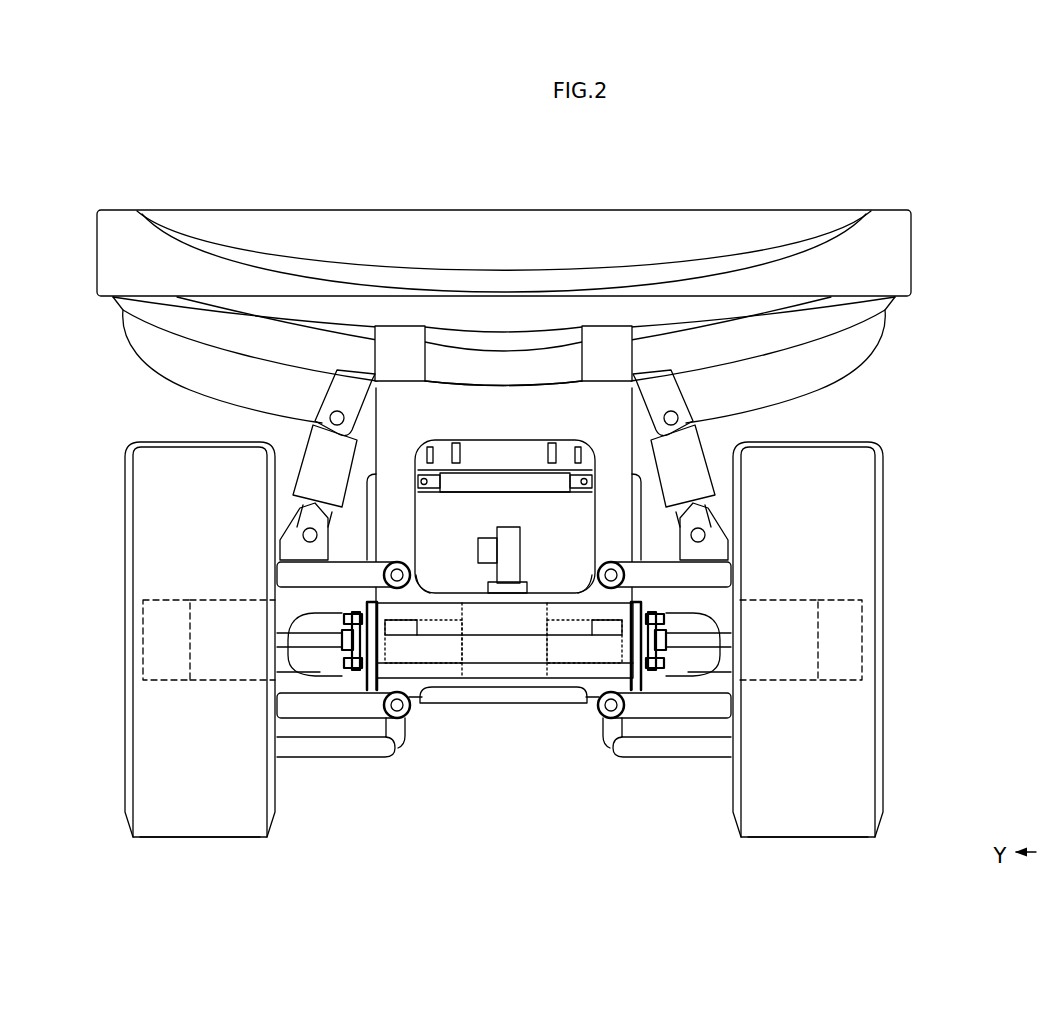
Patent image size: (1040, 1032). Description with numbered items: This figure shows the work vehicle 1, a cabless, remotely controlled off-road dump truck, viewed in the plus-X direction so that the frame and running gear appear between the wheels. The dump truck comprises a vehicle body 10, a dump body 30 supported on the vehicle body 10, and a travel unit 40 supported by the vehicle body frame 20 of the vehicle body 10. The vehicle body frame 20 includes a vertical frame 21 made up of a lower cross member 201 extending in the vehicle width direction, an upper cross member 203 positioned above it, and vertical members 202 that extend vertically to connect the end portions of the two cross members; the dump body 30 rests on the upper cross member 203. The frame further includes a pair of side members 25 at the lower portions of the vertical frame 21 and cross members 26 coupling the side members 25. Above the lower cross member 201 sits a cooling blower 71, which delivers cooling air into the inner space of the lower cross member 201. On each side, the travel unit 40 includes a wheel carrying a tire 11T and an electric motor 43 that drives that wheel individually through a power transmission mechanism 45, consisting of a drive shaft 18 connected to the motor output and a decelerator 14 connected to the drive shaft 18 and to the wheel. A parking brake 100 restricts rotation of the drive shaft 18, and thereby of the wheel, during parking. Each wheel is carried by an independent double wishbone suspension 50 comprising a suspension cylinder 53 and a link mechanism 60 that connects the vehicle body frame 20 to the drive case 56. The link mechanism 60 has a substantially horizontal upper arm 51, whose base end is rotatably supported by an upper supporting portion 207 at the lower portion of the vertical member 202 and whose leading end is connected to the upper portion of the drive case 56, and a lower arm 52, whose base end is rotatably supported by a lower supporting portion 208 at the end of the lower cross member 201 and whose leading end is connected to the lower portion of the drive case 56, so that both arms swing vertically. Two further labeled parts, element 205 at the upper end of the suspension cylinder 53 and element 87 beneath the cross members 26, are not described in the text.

The work vehicle 1 is at (553, 195).
The vehicle body 10 is at (944, 343).
The tire 11T is at (232, 840).
The decelerator 14 is at (170, 657).
The drive shaft 18 is at (370, 608).
The vehicle body frame 20 is at (452, 382).
The vertical frame 21 is at (513, 392).
The side member 25 is at (417, 628).
The cross member 26 is at (481, 660).
The dump body 30 is at (712, 237).
The travel unit 40 is at (896, 440).
The electric motor 43 is at (438, 692).
The power transmission mechanism 45 is at (232, 612).
The suspension 50 is at (257, 467).
The upper arm 51 is at (352, 573).
The lower arm 52 is at (360, 712).
The suspension cylinder 53 is at (313, 465).
The drive case 56 is at (283, 668).
The link mechanism 60 is at (285, 527).
The cooling blower 71 is at (512, 527).
The lower plate 87 is at (498, 700).
The parking brake 100 is at (350, 670).
The lower cross member 201 is at (523, 581).
The vertical member 202 is at (416, 523).
The upper cross member 203 is at (506, 425).
The upper bracket 205 is at (318, 408).
The upper supporting portion 207 is at (418, 583).
The lower supporting portion 208 is at (403, 745).